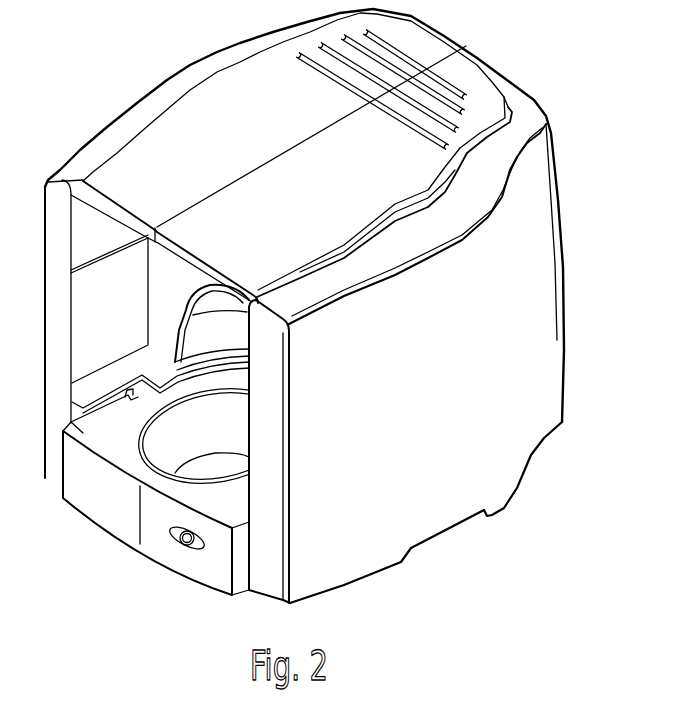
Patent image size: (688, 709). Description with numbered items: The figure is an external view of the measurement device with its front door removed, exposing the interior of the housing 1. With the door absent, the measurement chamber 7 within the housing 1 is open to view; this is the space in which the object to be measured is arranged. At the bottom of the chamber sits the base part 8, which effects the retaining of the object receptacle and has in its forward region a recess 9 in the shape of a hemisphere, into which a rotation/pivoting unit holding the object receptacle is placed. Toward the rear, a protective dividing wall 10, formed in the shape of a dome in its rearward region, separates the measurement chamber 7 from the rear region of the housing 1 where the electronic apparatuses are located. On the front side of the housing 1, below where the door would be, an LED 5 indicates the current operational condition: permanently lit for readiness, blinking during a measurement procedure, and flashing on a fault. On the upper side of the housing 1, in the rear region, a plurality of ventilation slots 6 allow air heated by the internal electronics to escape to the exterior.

The housing 1 is at (348, 301).
The LED 5 is at (177, 542).
The ventilation slots 6 is at (404, 53).
The measurement chamber 7 is at (94, 311).
The base part 8 is at (98, 445).
The recess 9 is at (150, 433).
The protective dividing wall 10 is at (218, 298).